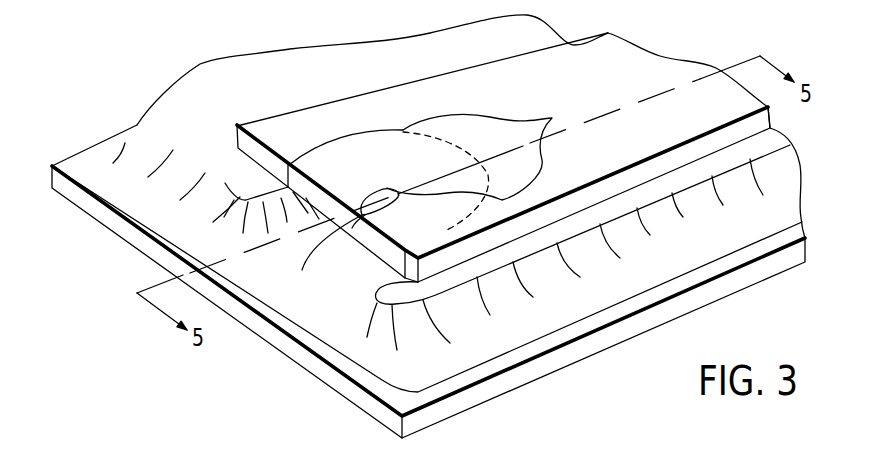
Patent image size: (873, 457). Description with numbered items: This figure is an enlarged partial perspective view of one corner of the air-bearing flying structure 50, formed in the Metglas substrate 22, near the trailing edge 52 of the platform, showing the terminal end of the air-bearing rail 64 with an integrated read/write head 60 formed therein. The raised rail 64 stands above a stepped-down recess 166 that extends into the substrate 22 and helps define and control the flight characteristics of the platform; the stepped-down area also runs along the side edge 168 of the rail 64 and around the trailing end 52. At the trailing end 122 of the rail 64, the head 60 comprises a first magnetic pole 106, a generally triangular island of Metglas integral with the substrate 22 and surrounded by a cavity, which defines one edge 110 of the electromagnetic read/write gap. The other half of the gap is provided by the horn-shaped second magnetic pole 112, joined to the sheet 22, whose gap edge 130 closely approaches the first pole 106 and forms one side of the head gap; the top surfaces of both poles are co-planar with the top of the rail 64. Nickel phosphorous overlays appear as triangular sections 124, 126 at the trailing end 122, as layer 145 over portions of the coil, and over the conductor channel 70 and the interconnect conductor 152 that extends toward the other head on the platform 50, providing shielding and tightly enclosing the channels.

The substrate 22 is at (623, 328).
The air-bearing flying structure 50 is at (702, 305).
The trailing edge 52 is at (65, 188).
The electromagnetic read/write head 60 is at (322, 253).
The air-bearing rail 64 is at (571, 62).
The conductor channel 70 is at (716, 242).
The first magnetic pole 106 is at (373, 194).
The gap edge 110 is at (386, 186).
The second magnetic pole 112 is at (453, 130).
The trailing end 122 is at (268, 148).
The triangular section 124 is at (433, 224).
The triangular section 126 is at (323, 163).
The second pole gap edge 130 is at (352, 228).
The nickel phosphorous layer 145 is at (538, 330).
The interconnect conductor 152 is at (126, 126).
The stepped-down recess 166 is at (348, 92).
The side edge 168 is at (640, 162).